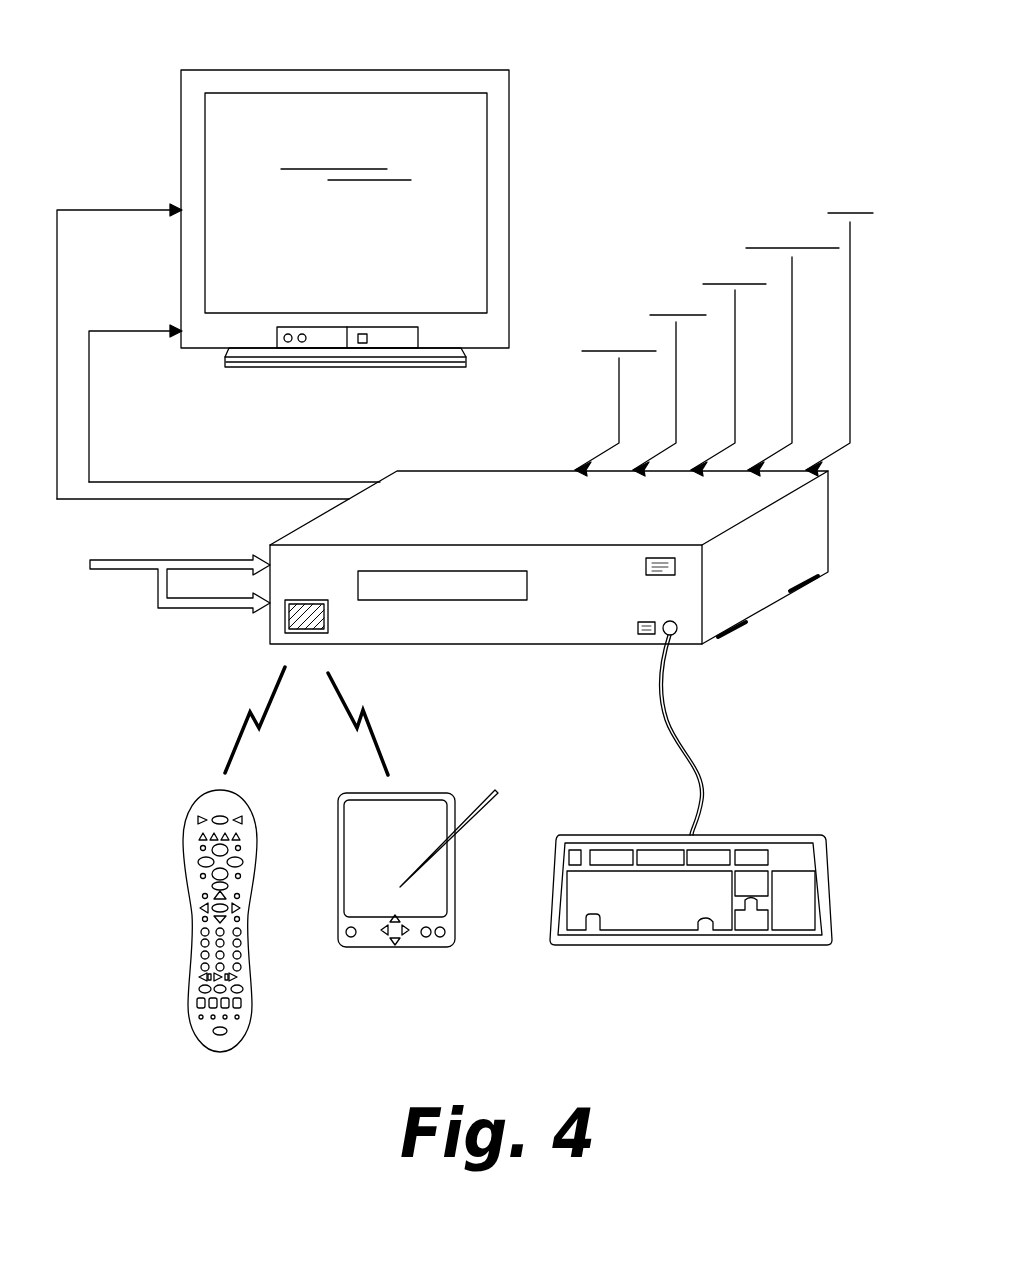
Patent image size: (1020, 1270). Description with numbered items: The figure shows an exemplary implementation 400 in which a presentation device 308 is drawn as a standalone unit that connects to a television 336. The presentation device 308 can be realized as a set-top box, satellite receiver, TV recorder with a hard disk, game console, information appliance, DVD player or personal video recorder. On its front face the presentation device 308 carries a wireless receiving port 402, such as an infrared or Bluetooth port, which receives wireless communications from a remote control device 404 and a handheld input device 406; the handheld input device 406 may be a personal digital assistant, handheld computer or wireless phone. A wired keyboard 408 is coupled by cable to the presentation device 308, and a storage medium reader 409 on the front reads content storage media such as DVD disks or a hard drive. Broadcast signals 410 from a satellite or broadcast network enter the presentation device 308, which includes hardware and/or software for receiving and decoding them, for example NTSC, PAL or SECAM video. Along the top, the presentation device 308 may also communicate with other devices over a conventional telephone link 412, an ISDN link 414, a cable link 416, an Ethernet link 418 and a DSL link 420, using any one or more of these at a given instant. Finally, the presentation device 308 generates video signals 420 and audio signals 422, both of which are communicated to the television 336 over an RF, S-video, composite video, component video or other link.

The exemplary implementation 400 is at (630, 90).
The presentation device 308 is at (549, 551).
The television 336 is at (461, 301).
The wireless receiving port 402 is at (320, 600).
The remote control device 404 is at (188, 815).
The handheld input device 406 is at (412, 793).
The wired keyboard 408 is at (737, 835).
The storage medium reader 409 is at (443, 600).
The broadcast signals 410 is at (145, 572).
The telephone link 412 is at (617, 313).
The ISDN link 414 is at (677, 278).
The cable link 416 is at (735, 245).
The Ethernet link 418 is at (792, 210).
The DSL link 420 is at (146, 244).
The audio signals 422 is at (146, 364).